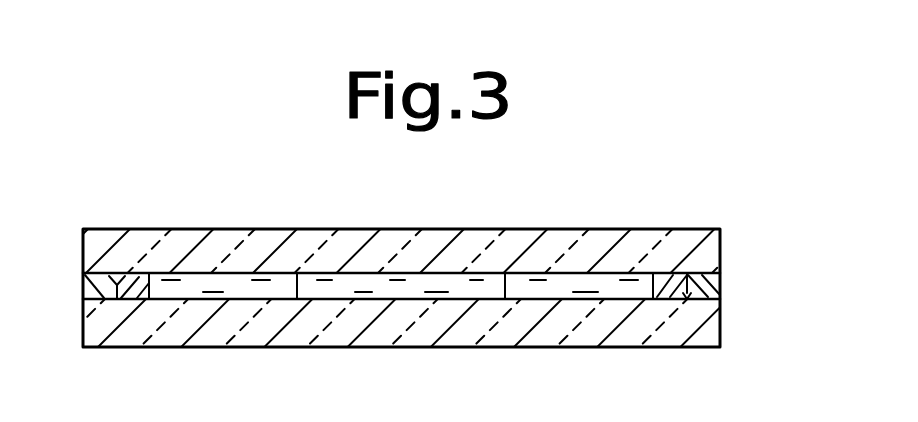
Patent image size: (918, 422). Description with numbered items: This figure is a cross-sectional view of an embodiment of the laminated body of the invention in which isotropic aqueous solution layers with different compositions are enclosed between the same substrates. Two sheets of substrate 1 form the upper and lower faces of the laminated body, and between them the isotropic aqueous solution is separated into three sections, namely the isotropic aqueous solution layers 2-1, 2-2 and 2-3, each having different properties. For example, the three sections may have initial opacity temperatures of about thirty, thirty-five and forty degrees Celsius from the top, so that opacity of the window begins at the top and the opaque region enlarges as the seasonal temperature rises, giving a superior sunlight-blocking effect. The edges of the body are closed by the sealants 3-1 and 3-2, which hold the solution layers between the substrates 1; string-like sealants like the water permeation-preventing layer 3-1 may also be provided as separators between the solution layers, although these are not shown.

The substrate 1 is at (433, 245).
The isotropic aqueous solution layer 2-1 is at (213, 291).
The isotropic aqueous solution layer 2-2 is at (405, 290).
The isotropic aqueous solution layer 2-3 is at (585, 290).
The sealant 3-1 is at (668, 278).
The sealant 3-2 is at (705, 281).